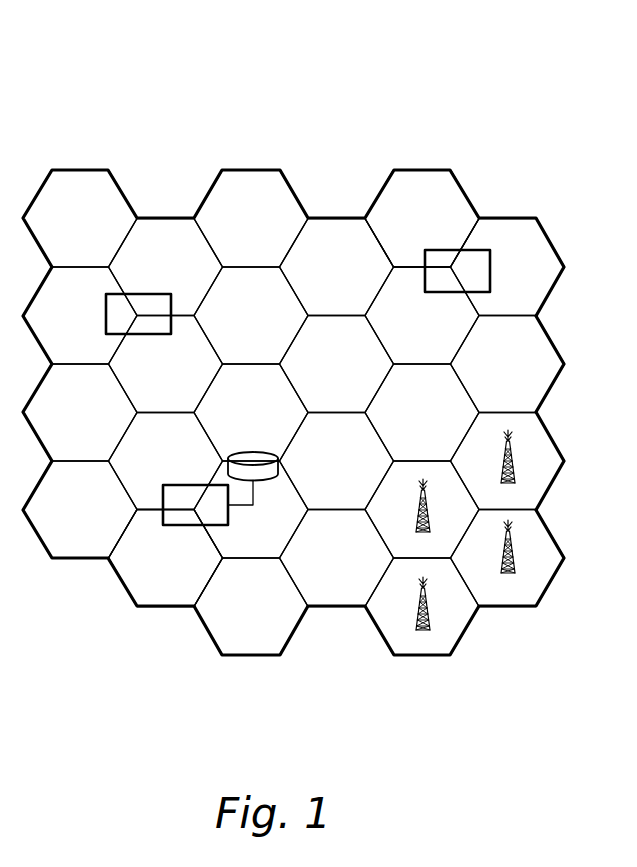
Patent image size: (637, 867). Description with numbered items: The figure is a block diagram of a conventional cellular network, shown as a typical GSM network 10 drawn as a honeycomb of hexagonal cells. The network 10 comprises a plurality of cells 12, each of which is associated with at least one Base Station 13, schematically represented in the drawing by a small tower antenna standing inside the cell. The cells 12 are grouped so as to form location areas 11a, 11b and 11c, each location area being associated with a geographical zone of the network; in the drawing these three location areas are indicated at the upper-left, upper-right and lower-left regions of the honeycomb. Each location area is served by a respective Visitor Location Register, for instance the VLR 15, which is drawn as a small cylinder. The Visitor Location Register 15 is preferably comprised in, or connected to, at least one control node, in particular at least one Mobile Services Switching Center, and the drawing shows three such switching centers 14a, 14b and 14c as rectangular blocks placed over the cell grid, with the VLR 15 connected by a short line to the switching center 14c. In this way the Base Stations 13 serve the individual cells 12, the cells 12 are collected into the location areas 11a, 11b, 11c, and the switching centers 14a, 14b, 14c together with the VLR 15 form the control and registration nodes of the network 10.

The GSM network 10 is at (249, 112).
The location area 11a is at (52, 170).
The location area 11b is at (451, 169).
The location area 11c is at (132, 599).
The cell 12 is at (540, 442).
The Base Station 13 is at (412, 497).
The Mobile Services Switching Center 14a is at (133, 307).
The Mobile Services Switching Center 14b is at (457, 282).
The Mobile Services Switching Center 14c is at (190, 497).
The Visitor Location Register 15 is at (258, 462).